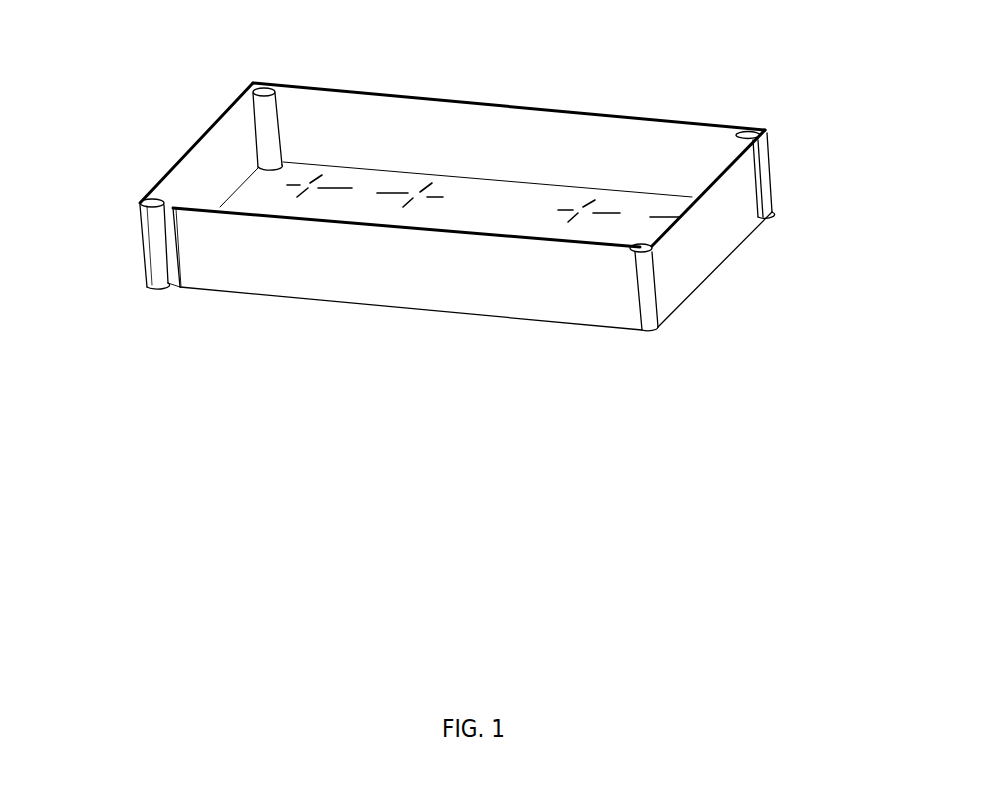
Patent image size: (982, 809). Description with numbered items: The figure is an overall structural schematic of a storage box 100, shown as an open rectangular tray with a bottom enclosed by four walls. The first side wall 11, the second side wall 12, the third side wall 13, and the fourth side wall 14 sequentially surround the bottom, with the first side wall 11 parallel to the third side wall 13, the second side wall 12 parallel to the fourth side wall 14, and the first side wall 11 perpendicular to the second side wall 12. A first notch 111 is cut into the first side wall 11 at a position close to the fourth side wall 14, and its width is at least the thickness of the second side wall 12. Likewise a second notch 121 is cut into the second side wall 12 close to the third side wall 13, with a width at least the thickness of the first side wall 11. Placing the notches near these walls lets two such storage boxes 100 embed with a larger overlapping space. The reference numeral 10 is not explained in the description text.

The storage box 100 is at (127, 568).
The housing 10 is at (357, 180).
The first side wall 11 is at (343, 292).
The first notch 111 is at (163, 277).
The second side wall 12 is at (725, 232).
The second notch 121 is at (766, 191).
The third side wall 13 is at (612, 140).
The fourth side wall 14 is at (207, 155).